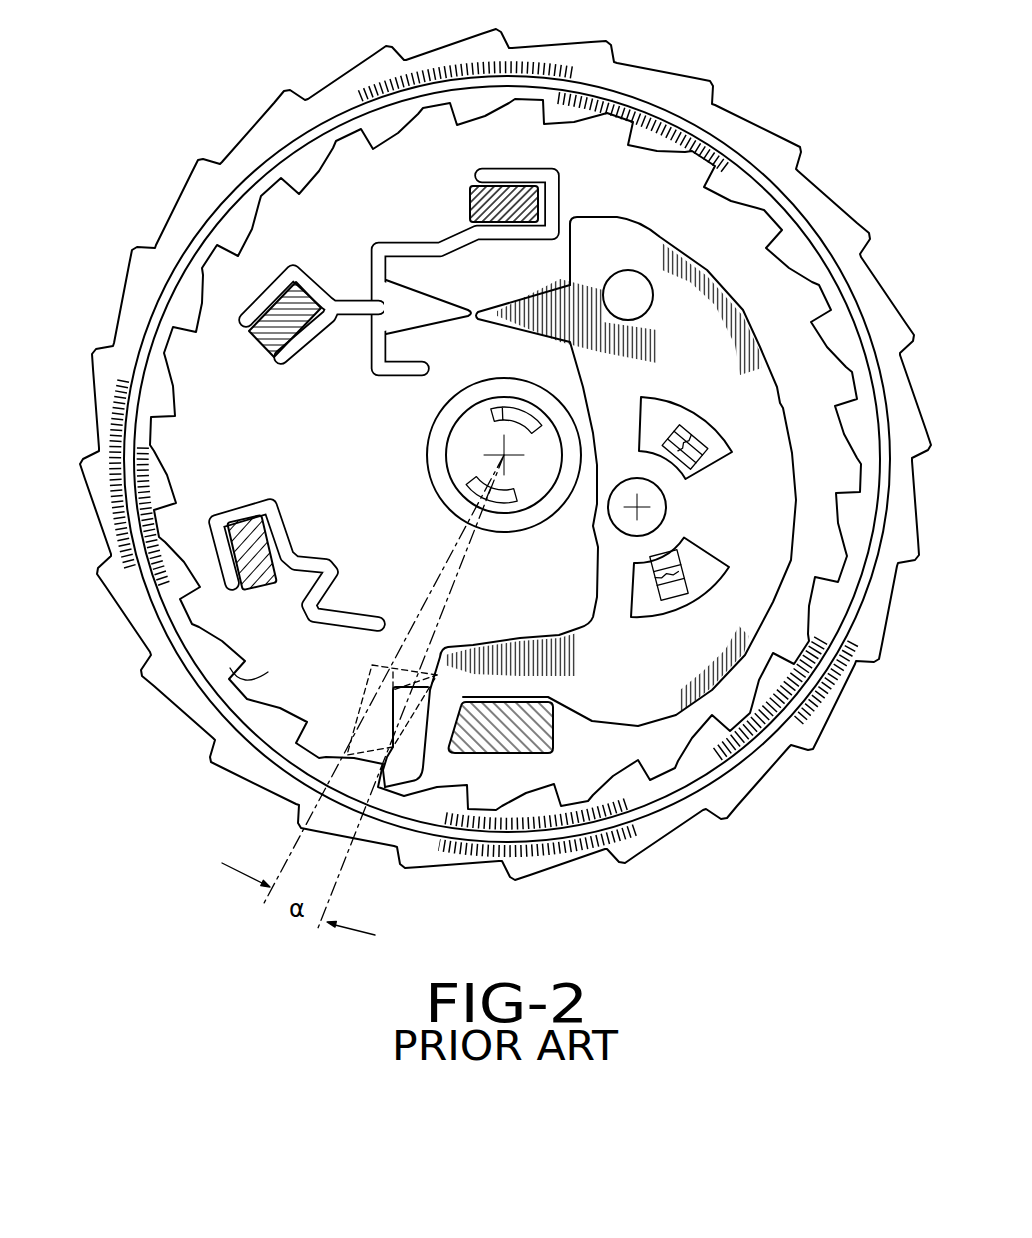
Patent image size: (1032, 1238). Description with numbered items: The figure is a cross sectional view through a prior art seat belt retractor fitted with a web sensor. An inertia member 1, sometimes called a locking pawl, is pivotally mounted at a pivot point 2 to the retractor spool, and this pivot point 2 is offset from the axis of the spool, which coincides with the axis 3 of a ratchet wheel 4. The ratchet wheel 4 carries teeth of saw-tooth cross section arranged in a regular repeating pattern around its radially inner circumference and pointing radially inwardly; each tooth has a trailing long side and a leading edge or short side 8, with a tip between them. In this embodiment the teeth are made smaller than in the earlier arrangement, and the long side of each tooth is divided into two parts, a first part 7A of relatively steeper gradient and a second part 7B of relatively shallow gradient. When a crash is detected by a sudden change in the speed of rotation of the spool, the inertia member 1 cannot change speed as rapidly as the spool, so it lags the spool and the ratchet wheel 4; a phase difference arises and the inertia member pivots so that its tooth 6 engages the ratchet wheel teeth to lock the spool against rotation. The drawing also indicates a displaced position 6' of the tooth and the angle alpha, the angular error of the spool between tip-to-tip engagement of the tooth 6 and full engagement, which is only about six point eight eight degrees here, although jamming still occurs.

The inertia member 1 is at (621, 665).
The pivot point 2 is at (637, 507).
The axis 3 is at (504, 455).
The ratchet wheel 4 is at (622, 800).
The tooth 6 is at (412, 803).
The spring in displaced position 6' is at (374, 692).
The first part 7A is at (217, 640).
The second part 7B is at (238, 657).
The leading edge 8 is at (233, 672).